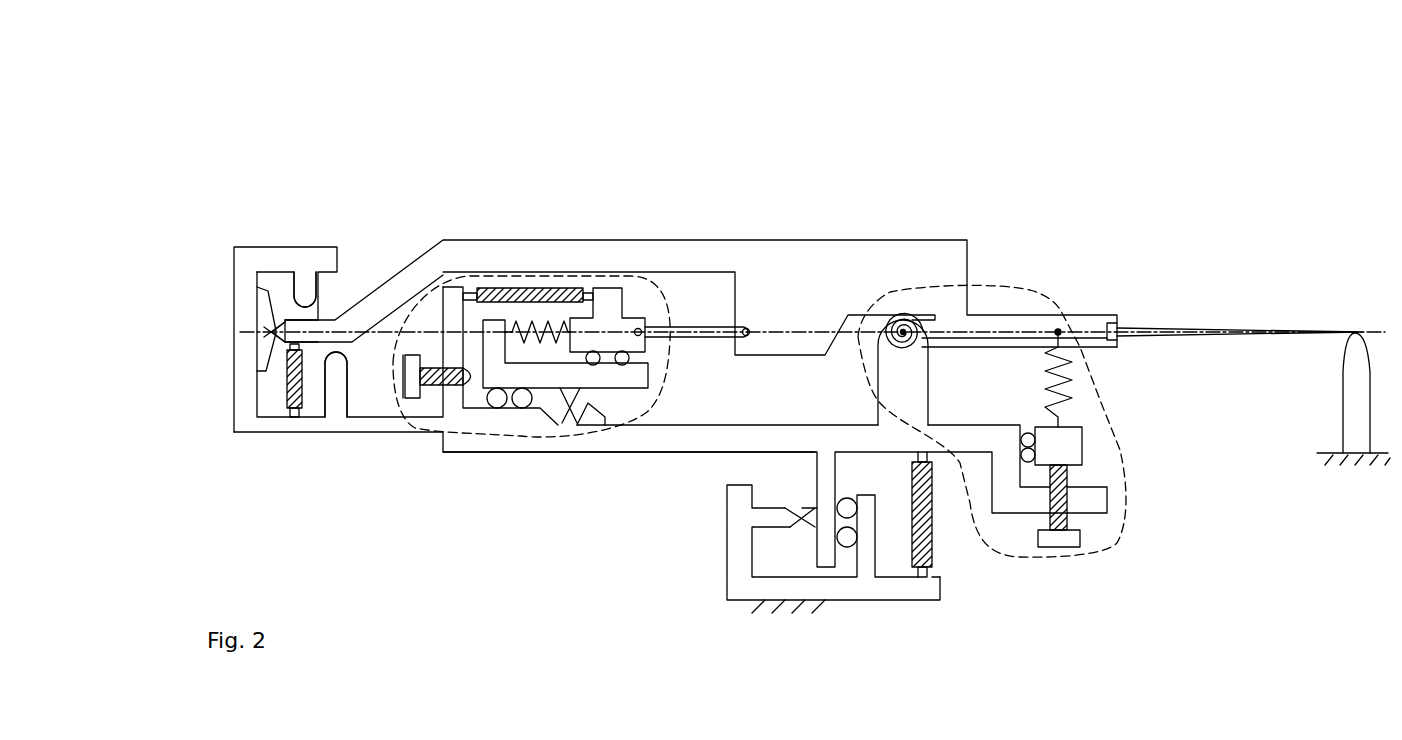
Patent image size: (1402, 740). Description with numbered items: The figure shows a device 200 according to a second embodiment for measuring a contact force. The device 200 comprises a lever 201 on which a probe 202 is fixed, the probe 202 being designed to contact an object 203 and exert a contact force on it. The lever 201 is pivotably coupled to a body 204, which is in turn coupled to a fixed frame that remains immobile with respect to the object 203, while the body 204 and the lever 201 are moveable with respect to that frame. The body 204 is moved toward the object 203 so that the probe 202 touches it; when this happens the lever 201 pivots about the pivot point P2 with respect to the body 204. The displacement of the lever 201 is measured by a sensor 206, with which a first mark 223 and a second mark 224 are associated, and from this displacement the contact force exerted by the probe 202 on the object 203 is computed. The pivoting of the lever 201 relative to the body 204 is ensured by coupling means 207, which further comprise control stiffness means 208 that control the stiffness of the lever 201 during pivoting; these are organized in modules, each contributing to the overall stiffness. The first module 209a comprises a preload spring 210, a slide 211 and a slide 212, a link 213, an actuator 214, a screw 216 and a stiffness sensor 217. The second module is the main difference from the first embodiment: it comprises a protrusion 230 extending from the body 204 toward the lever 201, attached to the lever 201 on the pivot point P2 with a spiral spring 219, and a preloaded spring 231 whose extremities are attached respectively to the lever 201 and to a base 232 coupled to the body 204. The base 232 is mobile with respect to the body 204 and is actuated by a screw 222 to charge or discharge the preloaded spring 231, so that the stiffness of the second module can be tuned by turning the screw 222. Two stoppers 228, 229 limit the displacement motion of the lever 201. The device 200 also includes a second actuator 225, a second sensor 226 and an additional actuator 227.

The device 200 is at (1212, 135).
The lever 201 is at (798, 277).
The probe 202 is at (1230, 326).
The object 203 is at (1355, 398).
The body 204 is at (718, 437).
The sensor 206 is at (270, 370).
The coupling means 207 is at (647, 412).
The control stiffness means 208 is at (450, 288).
The first module of the coupling means 209a is at (397, 397).
The preload spring of the first module 210 is at (522, 320).
The slide of the first module 211 is at (603, 306).
The slide of the first module 212 is at (493, 377).
The link of the first module 213 is at (690, 330).
The actuator of the first module 214 is at (493, 292).
The screw of the first module 216 is at (412, 390).
The stiffness sensor of the first module 217 is at (564, 405).
The spiral spring of the second module 219 is at (917, 318).
The screw of the second module 222 is at (1072, 545).
The first mark 223 is at (268, 293).
The second mark 224 is at (263, 307).
The second actuator 225 is at (920, 540).
The second sensor 226 is at (798, 535).
The additional actuator 227 is at (290, 400).
The stopper 228 is at (307, 293).
The stopper 229 is at (335, 370).
The protrusion of the second module 230 is at (905, 378).
The preloaded spring of the second module 231 is at (1072, 400).
The base of the second module 232 is at (1085, 455).
The pivot point P2 is at (903, 318).